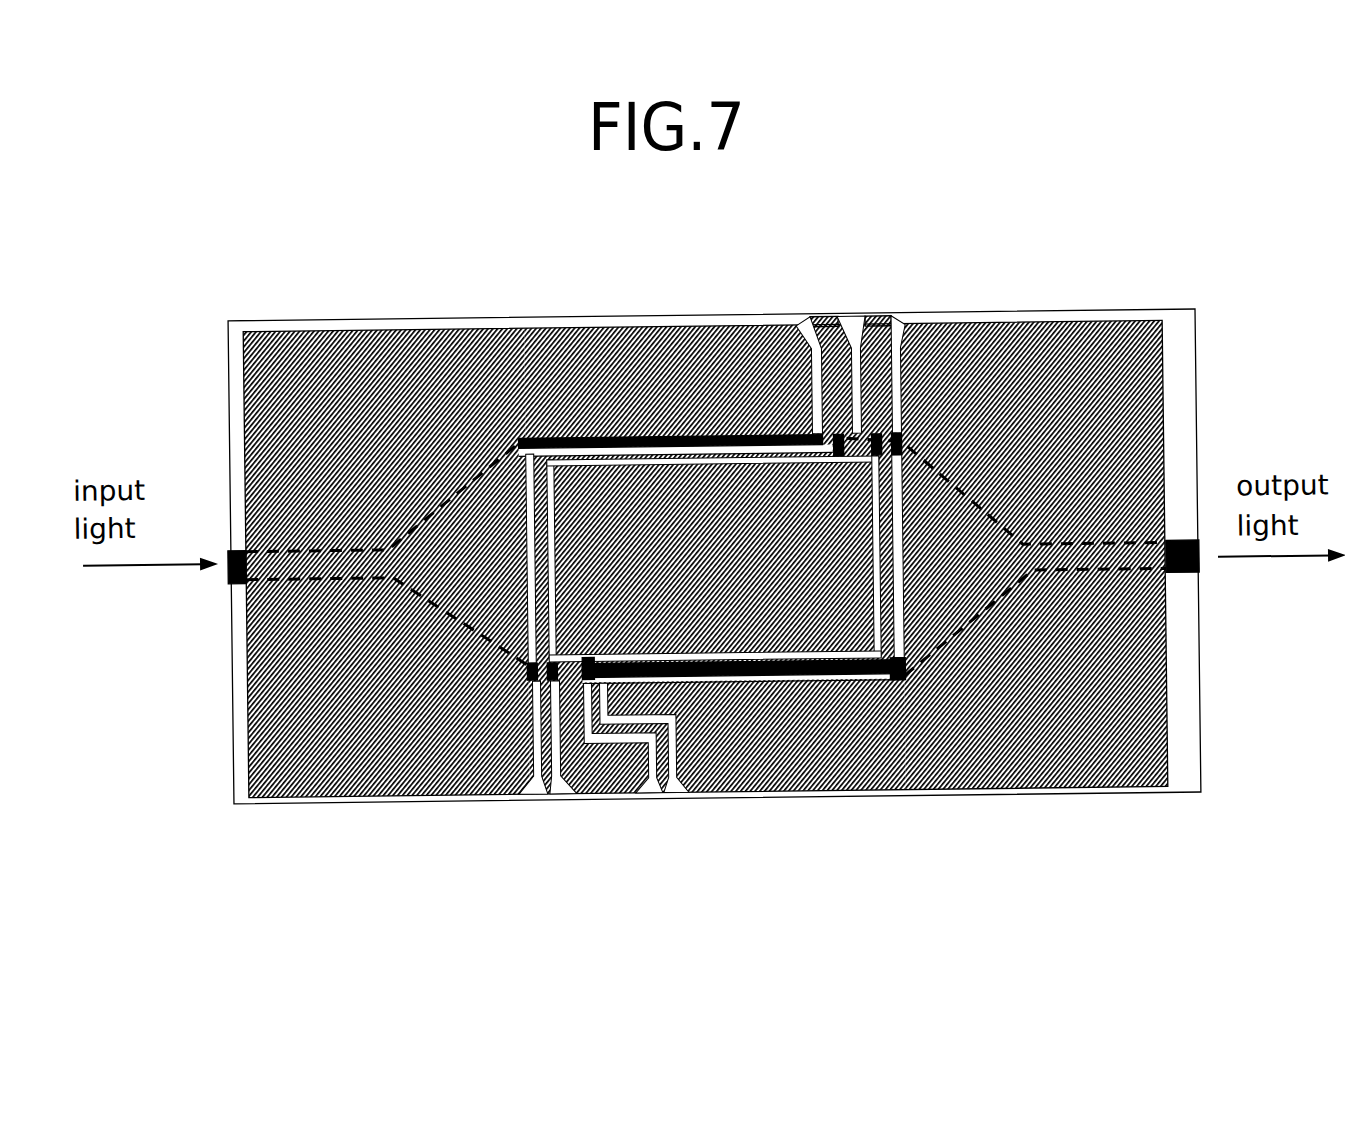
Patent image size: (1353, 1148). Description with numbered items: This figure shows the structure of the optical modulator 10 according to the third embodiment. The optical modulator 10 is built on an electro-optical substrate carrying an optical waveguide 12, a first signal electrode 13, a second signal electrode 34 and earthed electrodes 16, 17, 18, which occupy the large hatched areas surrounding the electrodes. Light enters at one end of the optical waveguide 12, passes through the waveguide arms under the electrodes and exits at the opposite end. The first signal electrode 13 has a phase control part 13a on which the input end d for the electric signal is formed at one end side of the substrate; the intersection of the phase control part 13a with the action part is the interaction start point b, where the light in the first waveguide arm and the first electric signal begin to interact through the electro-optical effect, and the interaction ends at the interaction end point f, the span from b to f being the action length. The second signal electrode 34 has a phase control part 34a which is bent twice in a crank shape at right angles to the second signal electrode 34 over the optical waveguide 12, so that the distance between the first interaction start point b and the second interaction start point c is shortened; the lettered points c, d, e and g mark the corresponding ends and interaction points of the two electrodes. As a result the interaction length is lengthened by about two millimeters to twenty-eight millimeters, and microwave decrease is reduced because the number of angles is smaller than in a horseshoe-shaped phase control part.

The optical modulator 10 is at (1183, 308).
The optical waveguide 12 is at (235, 572).
The first signal electrode 13 is at (756, 357).
The phase control part 13a is at (520, 733).
The second signal electrode 34 is at (943, 354).
The phase control part 34a is at (665, 748).
The earthed electrode 16 is at (287, 777).
The ground electrode 17 is at (604, 785).
The ground electrode 18 is at (1094, 785).
The interaction start point b is at (518, 436).
The second interaction start point c is at (538, 788).
The input end d is at (529, 788).
The electrode branch e is at (645, 789).
The interaction end point f is at (805, 426).
The waveguide branch point g is at (894, 674).